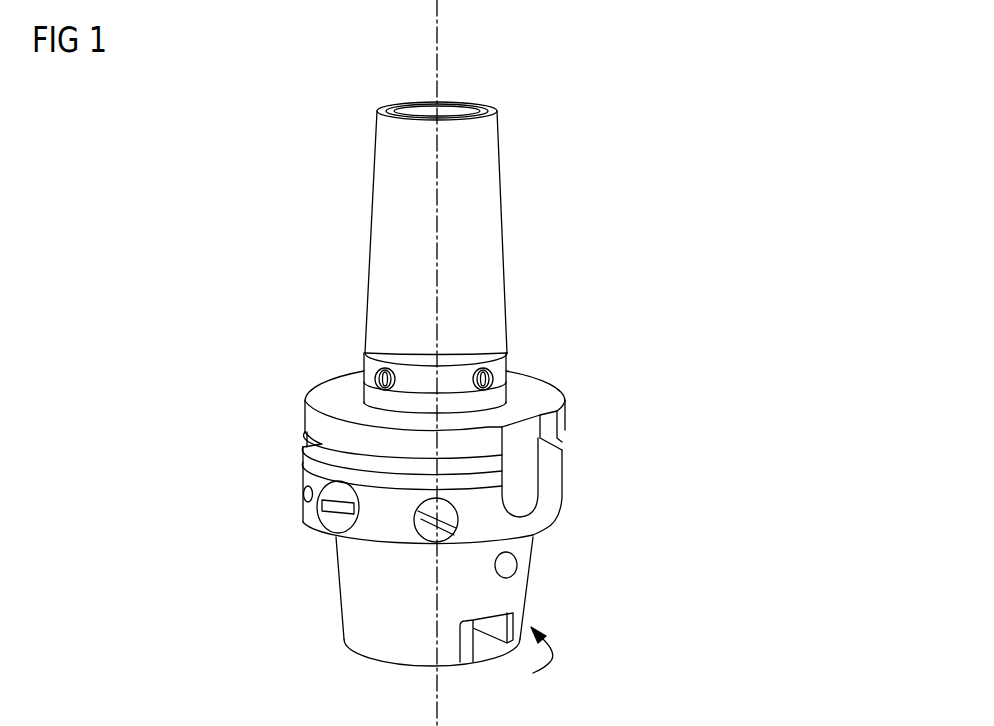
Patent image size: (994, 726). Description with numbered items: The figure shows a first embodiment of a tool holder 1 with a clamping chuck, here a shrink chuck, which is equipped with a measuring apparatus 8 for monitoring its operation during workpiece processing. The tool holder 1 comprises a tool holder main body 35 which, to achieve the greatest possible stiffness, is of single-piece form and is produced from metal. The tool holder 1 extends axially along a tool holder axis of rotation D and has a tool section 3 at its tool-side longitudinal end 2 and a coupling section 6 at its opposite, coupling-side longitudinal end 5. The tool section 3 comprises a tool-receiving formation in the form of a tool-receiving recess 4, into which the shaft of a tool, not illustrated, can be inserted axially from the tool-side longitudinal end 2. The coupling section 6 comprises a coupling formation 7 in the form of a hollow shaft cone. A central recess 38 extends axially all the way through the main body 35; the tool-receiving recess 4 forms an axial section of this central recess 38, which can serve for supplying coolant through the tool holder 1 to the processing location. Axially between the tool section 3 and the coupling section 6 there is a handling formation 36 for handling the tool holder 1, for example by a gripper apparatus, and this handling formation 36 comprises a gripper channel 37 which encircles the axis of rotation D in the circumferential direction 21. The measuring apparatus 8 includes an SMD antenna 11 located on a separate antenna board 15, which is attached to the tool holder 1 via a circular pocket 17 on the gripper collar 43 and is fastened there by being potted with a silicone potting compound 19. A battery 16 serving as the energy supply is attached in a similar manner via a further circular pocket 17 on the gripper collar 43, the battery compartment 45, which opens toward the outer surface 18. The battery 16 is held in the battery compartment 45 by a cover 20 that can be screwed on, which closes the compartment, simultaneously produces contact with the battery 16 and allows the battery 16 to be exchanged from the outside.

The tool holder axis of rotation D is at (437, 22).
The tool holder 1 is at (482, 375).
The measuring apparatus 8 is at (633, 193).
The tool-side axial longitudinal end 2 is at (535, 79).
The tool section 3 is at (480, 150).
The central recess 38 is at (395, 82).
The tool-receiving recess 4 is at (458, 80).
The tool holder main body 35 is at (526, 332).
The handling formation 36 is at (606, 322).
The gripper collar 43 is at (304, 418).
The circumferential direction 21 is at (573, 389).
The gripper channel 37 is at (308, 453).
The outer surface 18 is at (558, 510).
The circular pocket 17 is at (289, 574).
The battery compartment 45 is at (239, 537).
The cover for battery compartment 20 is at (239, 537).
The battery 16 is at (334, 519).
The potting compound 19 is at (295, 582).
The SMD antenna 11 is at (295, 582).
The antenna board 15 is at (428, 532).
The coupling section 6 is at (508, 597).
The coupling-side axial longitudinal end 5 is at (363, 678).
The coupling formation 7 is at (503, 678).